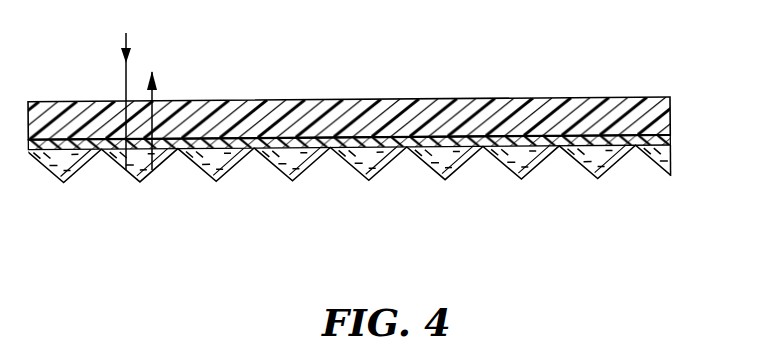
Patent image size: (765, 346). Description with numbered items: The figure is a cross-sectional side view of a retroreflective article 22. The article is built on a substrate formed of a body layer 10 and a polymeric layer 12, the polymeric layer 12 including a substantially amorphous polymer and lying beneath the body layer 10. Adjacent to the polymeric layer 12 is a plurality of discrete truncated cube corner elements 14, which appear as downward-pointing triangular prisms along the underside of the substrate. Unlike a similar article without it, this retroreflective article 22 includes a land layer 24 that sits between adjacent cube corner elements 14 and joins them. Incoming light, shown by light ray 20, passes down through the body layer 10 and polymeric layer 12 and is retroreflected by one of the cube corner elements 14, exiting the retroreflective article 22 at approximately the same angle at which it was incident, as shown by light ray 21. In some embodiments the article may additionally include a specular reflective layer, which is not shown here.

The body layer 10 is at (670, 113).
The polymeric layer 12 is at (670, 139).
The discrete truncated cube corner elements 14 is at (670, 153).
The light ray 20 is at (125, 82).
The light ray 21 is at (152, 97).
The retroreflective article 22 is at (385, 113).
The land layer 24 is at (178, 150).